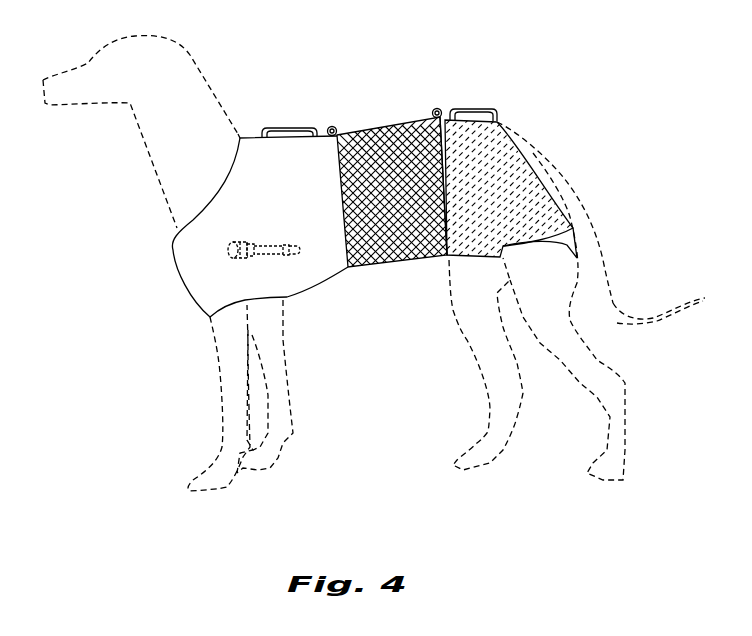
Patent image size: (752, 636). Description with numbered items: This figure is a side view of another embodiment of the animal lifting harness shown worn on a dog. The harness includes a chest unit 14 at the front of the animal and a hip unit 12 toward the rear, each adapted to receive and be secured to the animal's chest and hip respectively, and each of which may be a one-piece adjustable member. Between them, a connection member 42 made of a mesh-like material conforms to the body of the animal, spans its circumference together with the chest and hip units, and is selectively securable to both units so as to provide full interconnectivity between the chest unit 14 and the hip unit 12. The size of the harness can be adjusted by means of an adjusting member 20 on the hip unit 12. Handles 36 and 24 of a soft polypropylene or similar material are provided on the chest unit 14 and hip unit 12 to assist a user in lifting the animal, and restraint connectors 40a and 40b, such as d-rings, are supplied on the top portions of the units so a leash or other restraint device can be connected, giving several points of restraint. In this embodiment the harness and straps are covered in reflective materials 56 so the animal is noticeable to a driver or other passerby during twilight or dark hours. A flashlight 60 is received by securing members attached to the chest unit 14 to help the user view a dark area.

The hip unit 12 is at (513, 165).
The chest unit 14 is at (210, 293).
The adjusting member 20 is at (577, 245).
The handle 24 is at (485, 108).
The handle 36 is at (290, 126).
The restraint connector 40a is at (334, 126).
The restraint connector 40b is at (437, 108).
The connection member 42 is at (382, 268).
The reflective materials 56 is at (448, 258).
The flashlight 60 is at (230, 254).